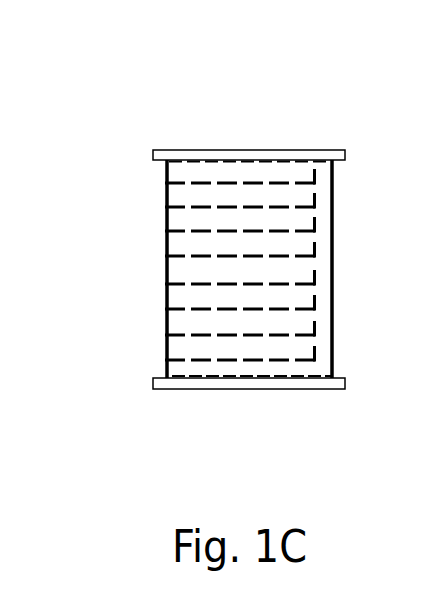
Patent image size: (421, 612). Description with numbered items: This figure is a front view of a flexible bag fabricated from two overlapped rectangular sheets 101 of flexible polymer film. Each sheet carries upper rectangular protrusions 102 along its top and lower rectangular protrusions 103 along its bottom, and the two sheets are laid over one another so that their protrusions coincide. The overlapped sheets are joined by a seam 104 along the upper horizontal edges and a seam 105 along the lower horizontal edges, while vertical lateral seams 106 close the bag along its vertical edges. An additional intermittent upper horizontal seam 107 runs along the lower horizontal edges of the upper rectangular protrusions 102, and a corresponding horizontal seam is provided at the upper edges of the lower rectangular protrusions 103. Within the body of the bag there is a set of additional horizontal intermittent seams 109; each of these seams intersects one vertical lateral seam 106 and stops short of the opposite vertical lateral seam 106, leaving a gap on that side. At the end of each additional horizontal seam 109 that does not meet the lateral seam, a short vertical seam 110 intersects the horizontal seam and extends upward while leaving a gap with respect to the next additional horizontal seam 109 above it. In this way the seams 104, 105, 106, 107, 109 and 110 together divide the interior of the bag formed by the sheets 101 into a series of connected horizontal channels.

The rectangular sheets 101 is at (252, 148).
The upper rectangular protrusions 102 is at (235, 389).
The lower rectangular protrusions 103 is at (162, 255).
The upper horizontal edge seam 104 is at (153, 156).
The lower horizontal edge seam 105 is at (345, 376).
The vertical lateral seams 106 is at (290, 161).
The intermittent upper horizontal seam 107 is at (203, 374).
The additional horizontal intermittent seams 109 is at (190, 207).
The short vertical seam 110 is at (315, 226).